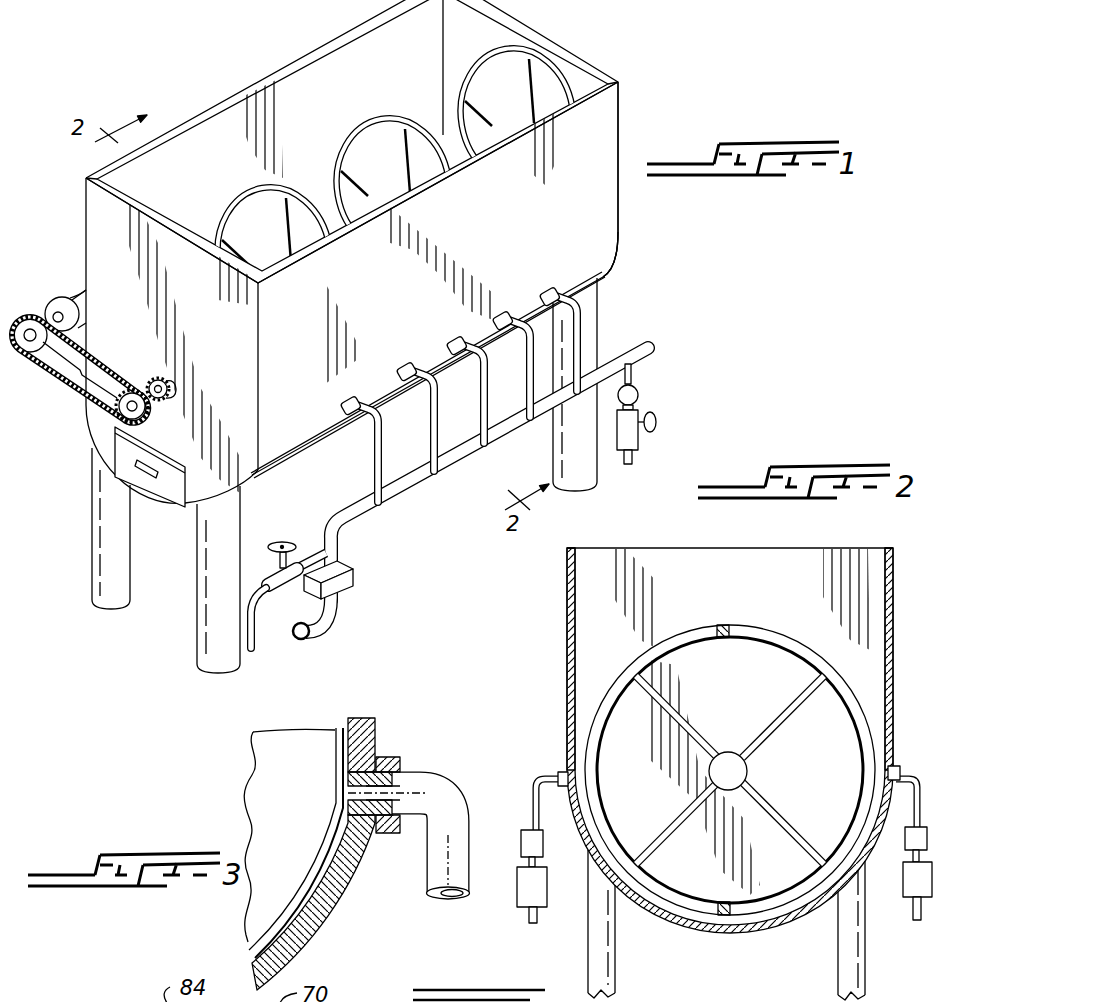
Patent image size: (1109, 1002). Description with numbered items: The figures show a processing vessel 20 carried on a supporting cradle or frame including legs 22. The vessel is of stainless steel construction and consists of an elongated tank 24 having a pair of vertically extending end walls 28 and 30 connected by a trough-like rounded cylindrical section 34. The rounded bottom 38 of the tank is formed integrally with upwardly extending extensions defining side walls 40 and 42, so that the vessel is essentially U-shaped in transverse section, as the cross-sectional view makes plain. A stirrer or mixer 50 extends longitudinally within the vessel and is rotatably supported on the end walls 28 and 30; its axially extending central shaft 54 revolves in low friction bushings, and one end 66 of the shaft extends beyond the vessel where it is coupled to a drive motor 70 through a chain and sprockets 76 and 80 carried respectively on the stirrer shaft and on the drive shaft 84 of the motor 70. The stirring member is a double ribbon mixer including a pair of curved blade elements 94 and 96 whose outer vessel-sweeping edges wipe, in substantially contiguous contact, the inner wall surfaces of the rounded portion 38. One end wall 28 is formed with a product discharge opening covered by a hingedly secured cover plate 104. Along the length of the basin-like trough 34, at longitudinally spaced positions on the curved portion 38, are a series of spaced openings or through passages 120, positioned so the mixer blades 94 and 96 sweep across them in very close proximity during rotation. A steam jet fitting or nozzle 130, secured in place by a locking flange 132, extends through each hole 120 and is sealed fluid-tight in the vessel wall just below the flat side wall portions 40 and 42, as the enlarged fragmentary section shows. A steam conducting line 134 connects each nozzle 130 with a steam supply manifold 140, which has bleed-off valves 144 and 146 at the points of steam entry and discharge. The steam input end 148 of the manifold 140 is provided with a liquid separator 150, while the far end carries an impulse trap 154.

In FIG. 1, the processing vessel 20 is at (628, 108).
In FIG. 1, the legs 22 is at (112, 558).
In FIG. 2, the legs 22 is at (598, 958).
In FIG. 1, the elongated tank 24 is at (590, 207).
In FIG. 1, the end wall 28 is at (104, 209).
In FIG. 1, the end wall 30 is at (567, 43).
In FIG. 2, the end wall 30 is at (687, 571).
In FIG. 1, the trough-like rounded cylindrical section 34 is at (603, 248).
In FIG. 2, the trough-like rounded cylindrical section 34 is at (725, 925).
In FIG. 1, the rounded bottom 38 is at (290, 456).
In FIG. 3, the rounded bottom 38 is at (328, 906).
In FIG. 1, the side wall 40 is at (287, 320).
In FIG. 2, the side wall 40 is at (893, 632).
In FIG. 3, the side wall 40 is at (372, 742).
In FIG. 1, the side wall 42 is at (230, 97).
In FIG. 2, the side wall 42 is at (566, 628).
In FIG. 1, the stirrer or mixer 50 is at (388, 185).
In FIG. 2, the stirrer or mixer 50 is at (730, 752).
In FIG. 2, the central shaft 54 is at (750, 770).
In FIG. 1, the shaft end 66 is at (153, 379).
In FIG. 1, the drive motor 70 is at (77, 297).
In FIG. 1, the sprocket 76 is at (130, 417).
In FIG. 1, the sprocket 80 is at (34, 350).
In FIG. 1, the drive shaft 84 is at (55, 313).
In FIG. 1, the curved blade element 94 is at (230, 203).
In FIG. 1, the curved blade element 96 is at (403, 123).
In FIG. 1, the cover plate 104 is at (165, 493).
In FIG. 3, the openings or through passages 120 is at (343, 773).
In FIG. 3, the steam jet fitting or nozzle 130 is at (377, 833).
In FIG. 1, the locking flange 132 is at (553, 287).
In FIG. 2, the locking flange 132 is at (560, 773).
In FIG. 3, the locking flange 132 is at (388, 760).
In FIG. 1, the steam conducting line 134 is at (582, 355).
In FIG. 3, the steam conducting line 134 is at (440, 807).
In FIG. 1, the steam supply manifold 140 is at (468, 453).
In FIG. 1, the bleed-off valve 144 is at (285, 593).
In FIG. 1, the bleed-off valve 146 is at (640, 437).
In FIG. 2, the bleed-off valve 146 is at (543, 888).
In FIG. 1, the steam input end 148 is at (334, 620).
In FIG. 1, the liquid separator 150 is at (353, 572).
In FIG. 1, the impulse trap 154 is at (638, 392).
In FIG. 2, the impulse trap 154 is at (521, 840).